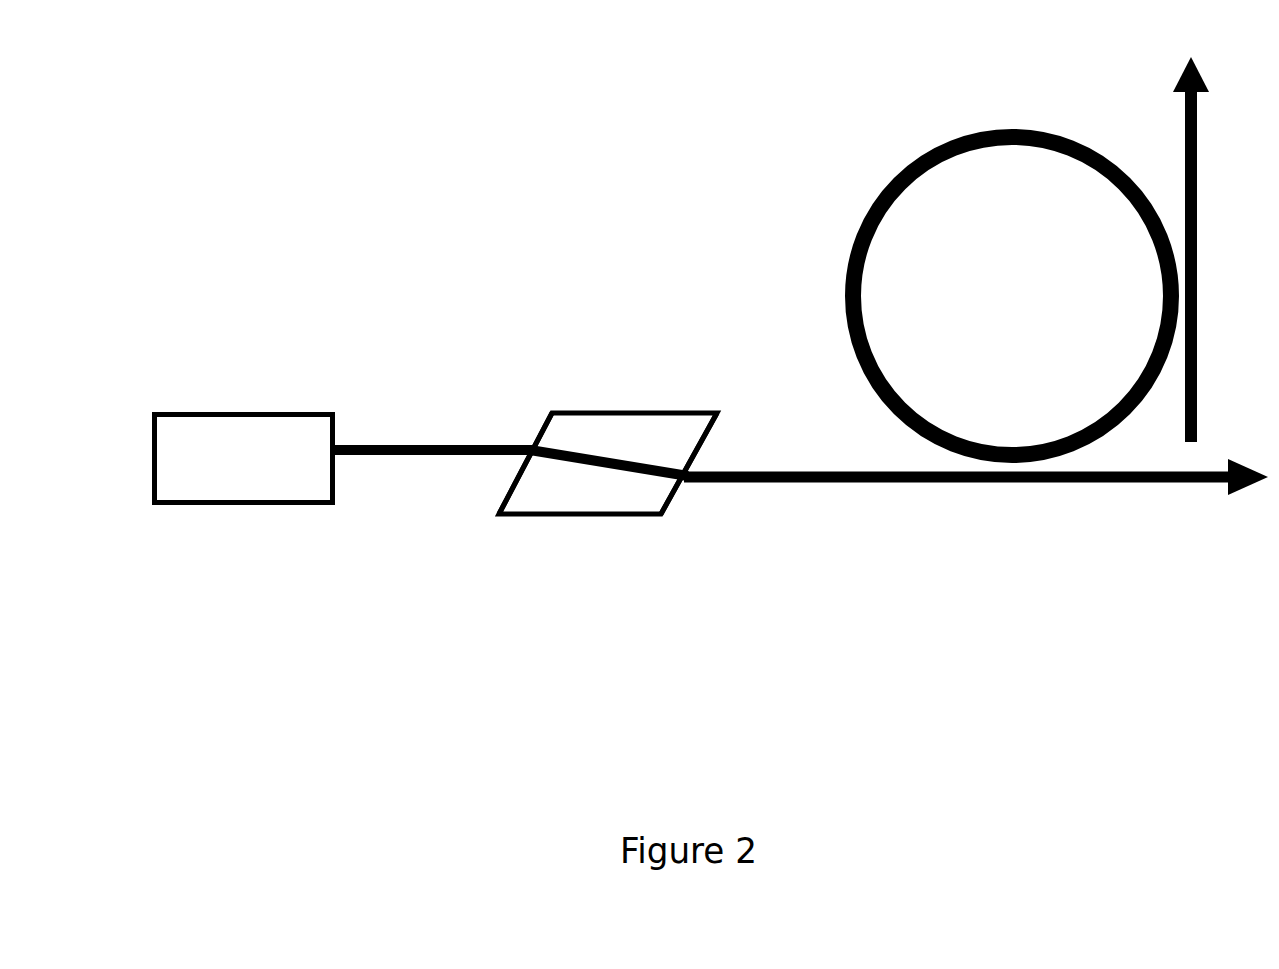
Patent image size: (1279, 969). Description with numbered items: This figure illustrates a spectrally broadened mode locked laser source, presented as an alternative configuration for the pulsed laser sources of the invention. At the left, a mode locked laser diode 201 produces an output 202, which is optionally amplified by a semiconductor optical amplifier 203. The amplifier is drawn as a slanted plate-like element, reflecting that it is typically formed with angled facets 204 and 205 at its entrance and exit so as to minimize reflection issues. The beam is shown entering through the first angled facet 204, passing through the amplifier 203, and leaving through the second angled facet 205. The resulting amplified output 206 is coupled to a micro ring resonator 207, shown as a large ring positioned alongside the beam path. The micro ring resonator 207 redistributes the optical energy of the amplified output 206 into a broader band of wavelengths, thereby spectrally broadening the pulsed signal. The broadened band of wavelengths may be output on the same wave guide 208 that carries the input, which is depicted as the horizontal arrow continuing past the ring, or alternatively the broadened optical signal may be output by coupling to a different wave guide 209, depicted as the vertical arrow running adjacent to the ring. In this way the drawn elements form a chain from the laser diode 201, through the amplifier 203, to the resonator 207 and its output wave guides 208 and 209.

The mode locked laser diode 201 is at (275, 510).
The output 202 is at (385, 426).
The semiconductor optical amplifier 203 is at (583, 522).
The angled facet 204 is at (542, 416).
The angled facet 205 is at (690, 502).
The amplified output 206 is at (807, 491).
The micro ring resonator 207 is at (862, 198).
The wave guide 208 is at (1133, 489).
The wave guide 209 is at (1169, 117).